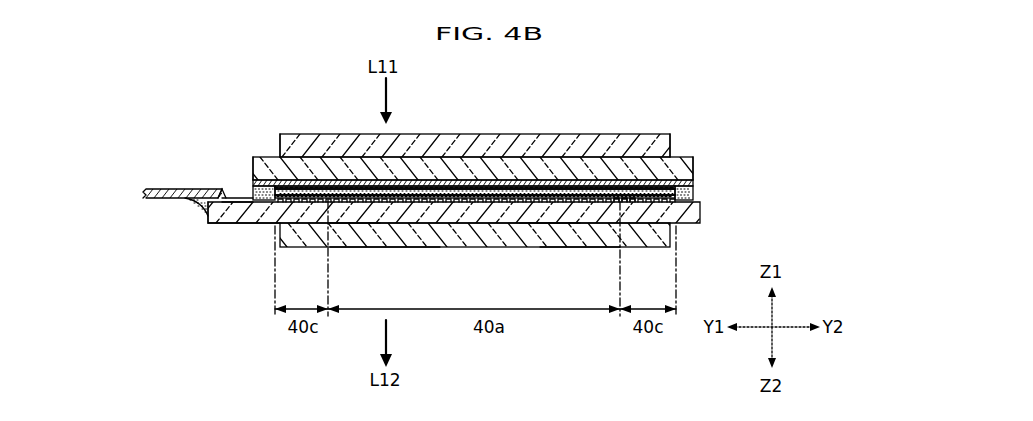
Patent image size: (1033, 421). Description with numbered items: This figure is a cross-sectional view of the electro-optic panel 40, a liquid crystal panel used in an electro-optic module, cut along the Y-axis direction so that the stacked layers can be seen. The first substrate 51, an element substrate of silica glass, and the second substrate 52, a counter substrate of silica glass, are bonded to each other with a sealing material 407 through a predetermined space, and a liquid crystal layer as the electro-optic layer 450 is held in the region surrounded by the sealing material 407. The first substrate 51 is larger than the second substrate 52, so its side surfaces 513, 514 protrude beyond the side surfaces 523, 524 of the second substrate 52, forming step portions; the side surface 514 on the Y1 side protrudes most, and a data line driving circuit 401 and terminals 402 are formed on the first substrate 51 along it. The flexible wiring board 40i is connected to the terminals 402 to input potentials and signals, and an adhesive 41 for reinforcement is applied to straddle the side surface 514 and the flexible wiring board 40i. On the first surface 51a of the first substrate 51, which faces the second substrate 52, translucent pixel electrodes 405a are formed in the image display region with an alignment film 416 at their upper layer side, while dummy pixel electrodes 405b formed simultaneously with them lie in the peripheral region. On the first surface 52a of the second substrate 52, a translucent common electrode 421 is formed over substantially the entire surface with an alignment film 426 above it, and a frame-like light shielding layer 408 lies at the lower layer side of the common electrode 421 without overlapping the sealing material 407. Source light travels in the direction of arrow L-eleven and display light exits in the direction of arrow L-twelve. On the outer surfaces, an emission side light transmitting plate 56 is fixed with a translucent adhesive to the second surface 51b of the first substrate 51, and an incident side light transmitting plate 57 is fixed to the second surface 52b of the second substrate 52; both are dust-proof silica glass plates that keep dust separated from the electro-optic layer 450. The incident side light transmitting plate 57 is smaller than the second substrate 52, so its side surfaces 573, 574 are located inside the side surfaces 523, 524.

The electro-optic panel 40 is at (716, 90).
The flexible wiring board 40i is at (153, 199).
The adhesive 41 is at (194, 213).
The first substrate 51 is at (672, 228).
The first surface 51a is at (355, 224).
The second surface 51b is at (385, 228).
The second substrate 52 is at (695, 160).
The first surface 52a is at (473, 190).
The second surface 52b is at (530, 200).
The emission side light transmitting plate 56 is at (572, 245).
The incident side light transmitting plate 57 is at (671, 148).
The data line driving circuit 401 is at (250, 201).
The terminals 402 is at (222, 193).
The pixel electrodes 405a is at (438, 201).
The dummy pixel electrodes 405b is at (632, 197).
The sealing material 407 is at (263, 201).
The light shielding layer 408 is at (320, 183).
The alignment film 416 is at (507, 195).
The common electrode 421 is at (432, 186).
The alignment film 426 is at (555, 195).
The electro-optic layer 450 is at (542, 226).
The side surface 513 is at (701, 210).
The side surface 514 is at (203, 216).
The side surface 523 is at (694, 171).
The side surface 524 is at (252, 168).
The side surface 573 is at (686, 163).
The side surface 574 is at (279, 147).